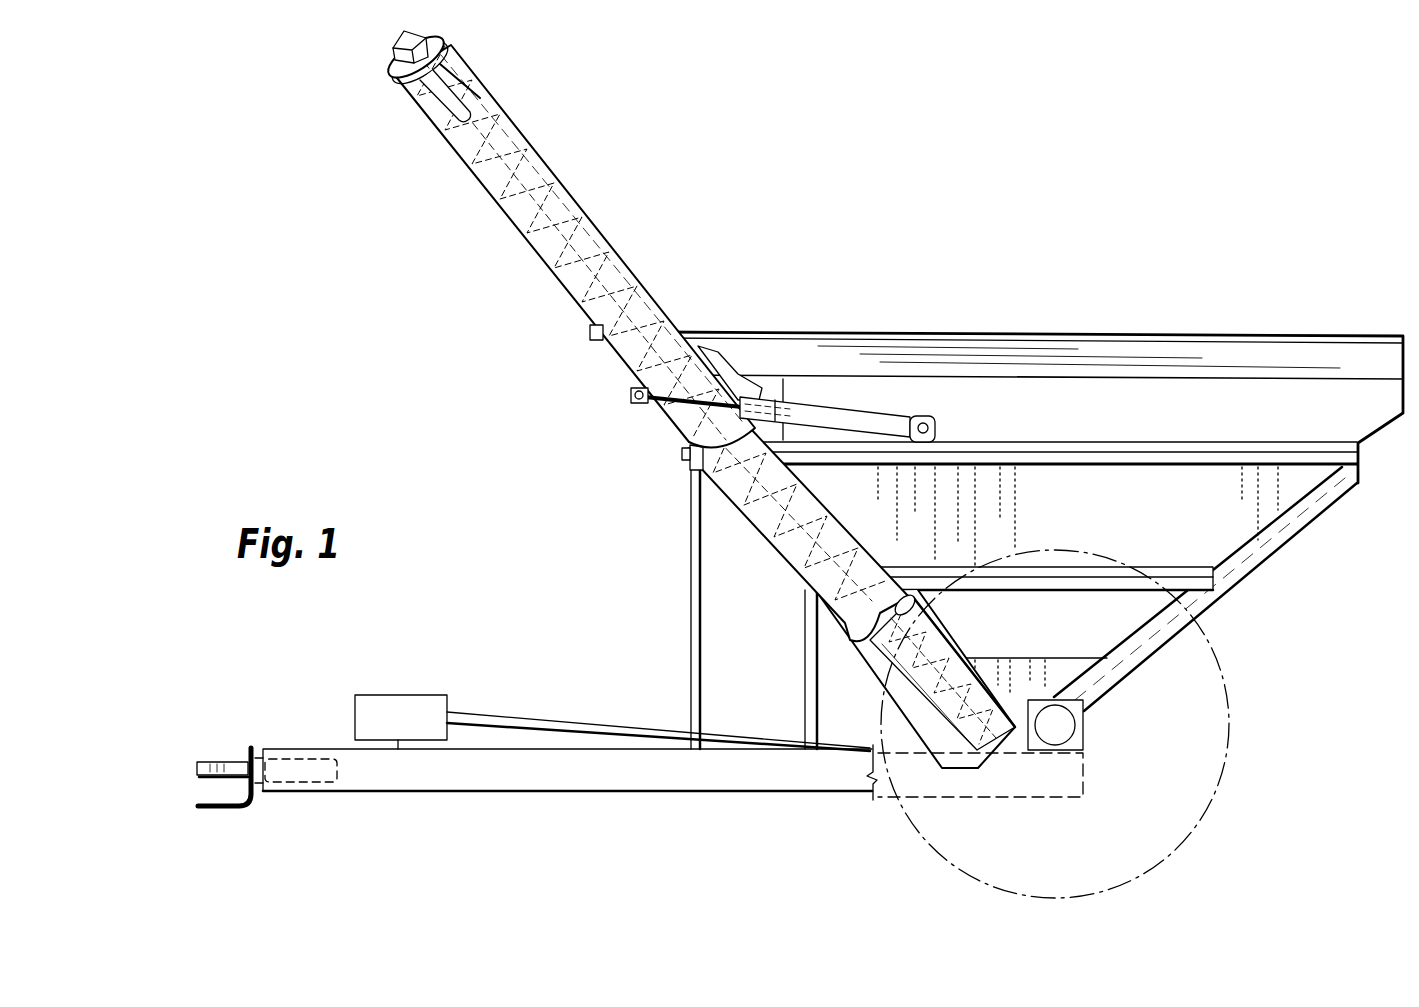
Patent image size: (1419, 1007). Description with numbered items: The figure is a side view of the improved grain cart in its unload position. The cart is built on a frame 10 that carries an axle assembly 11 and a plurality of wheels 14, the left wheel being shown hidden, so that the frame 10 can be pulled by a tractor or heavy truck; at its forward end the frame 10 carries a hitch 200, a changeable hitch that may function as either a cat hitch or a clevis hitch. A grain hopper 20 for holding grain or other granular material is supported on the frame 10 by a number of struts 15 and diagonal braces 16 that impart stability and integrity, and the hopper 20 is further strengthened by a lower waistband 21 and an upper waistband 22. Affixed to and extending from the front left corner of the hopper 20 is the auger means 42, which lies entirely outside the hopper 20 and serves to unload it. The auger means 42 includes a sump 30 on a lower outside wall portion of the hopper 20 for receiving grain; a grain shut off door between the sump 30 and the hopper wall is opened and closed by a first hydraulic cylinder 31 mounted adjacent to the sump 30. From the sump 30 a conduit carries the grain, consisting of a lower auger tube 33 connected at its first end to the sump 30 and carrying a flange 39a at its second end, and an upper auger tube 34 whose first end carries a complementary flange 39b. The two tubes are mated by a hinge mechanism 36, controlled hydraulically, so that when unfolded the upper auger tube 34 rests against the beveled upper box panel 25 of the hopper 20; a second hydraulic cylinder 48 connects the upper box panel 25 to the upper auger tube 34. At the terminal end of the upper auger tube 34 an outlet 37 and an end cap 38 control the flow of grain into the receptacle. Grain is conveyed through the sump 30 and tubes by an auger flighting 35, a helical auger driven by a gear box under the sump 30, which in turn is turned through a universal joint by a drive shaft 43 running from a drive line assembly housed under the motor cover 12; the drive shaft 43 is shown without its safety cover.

The frame 10 is at (591, 790).
The axle assembly 11 is at (1077, 733).
The motor cover 12 is at (401, 692).
The wheels 14 is at (1220, 792).
The struts 15 is at (805, 642).
The diagonal braces 16 is at (1253, 576).
The grain hopper 20 is at (1339, 316).
The lower waistband 21 is at (1245, 575).
The upper waistband 22 is at (1360, 459).
The upper box panel 25 is at (1086, 334).
The sump 30 is at (858, 655).
The first hydraulic cylinder 31 is at (947, 628).
The lower auger tube 33 is at (757, 527).
The upper auger tube 34 is at (595, 220).
The auger flighting 35 is at (530, 147).
The hinge mechanism 36 is at (760, 380).
The outlet 37 is at (427, 92).
The end cap 38 is at (392, 44).
The flange 39a is at (705, 471).
The flange 39b is at (683, 453).
The auger means 42 is at (601, 391).
The drive shaft 43 is at (518, 712).
The second hydraulic cylinder 48 is at (848, 412).
The hitch 200 is at (216, 748).